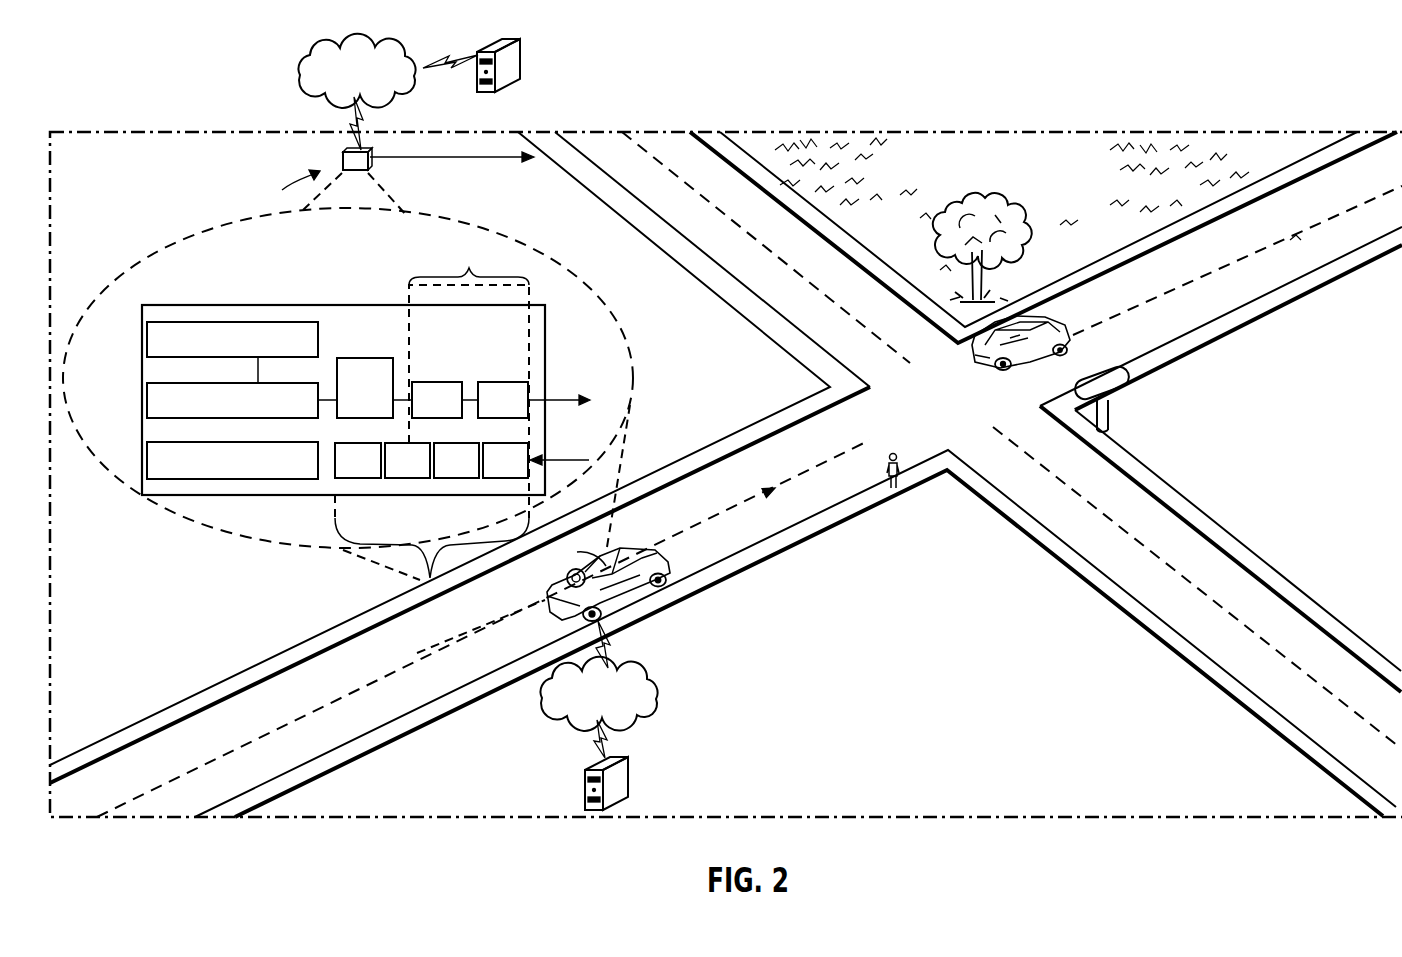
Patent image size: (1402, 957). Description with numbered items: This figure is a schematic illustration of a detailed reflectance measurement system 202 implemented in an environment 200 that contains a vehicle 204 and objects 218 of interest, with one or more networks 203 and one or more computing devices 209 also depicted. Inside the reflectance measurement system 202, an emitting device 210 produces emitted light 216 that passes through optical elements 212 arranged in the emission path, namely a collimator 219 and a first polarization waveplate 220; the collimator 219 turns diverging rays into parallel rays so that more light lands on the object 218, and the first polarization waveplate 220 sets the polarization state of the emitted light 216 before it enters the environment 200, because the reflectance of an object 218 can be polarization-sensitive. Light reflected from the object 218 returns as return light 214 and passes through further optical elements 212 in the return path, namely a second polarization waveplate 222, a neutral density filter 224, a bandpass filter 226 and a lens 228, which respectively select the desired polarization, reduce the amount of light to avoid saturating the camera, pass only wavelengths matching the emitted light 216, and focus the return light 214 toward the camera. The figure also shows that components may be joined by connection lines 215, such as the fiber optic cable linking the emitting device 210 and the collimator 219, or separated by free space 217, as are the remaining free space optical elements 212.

The environment 200 is at (892, 656).
The reflectance measurement system 202 is at (343, 165).
The networks 203 is at (337, 83).
The vehicle 204 is at (640, 600).
The computing devices 209 is at (507, 63).
The emitting device 210 is at (345, 415).
The optical elements 212 is at (383, 592).
The return light 214 is at (589, 460).
The connection lines 215 is at (406, 396).
The emitted light 216 is at (560, 398).
The free space 217 is at (467, 382).
The objects 218 is at (962, 200).
The collimator 219 is at (418, 415).
The first polarization waveplate 220 is at (484, 415).
The second polarization waveplate 222 is at (525, 474).
The neutral density filter 224 is at (476, 474).
The bandpass filter 226 is at (427, 474).
The lens 228 is at (339, 474).